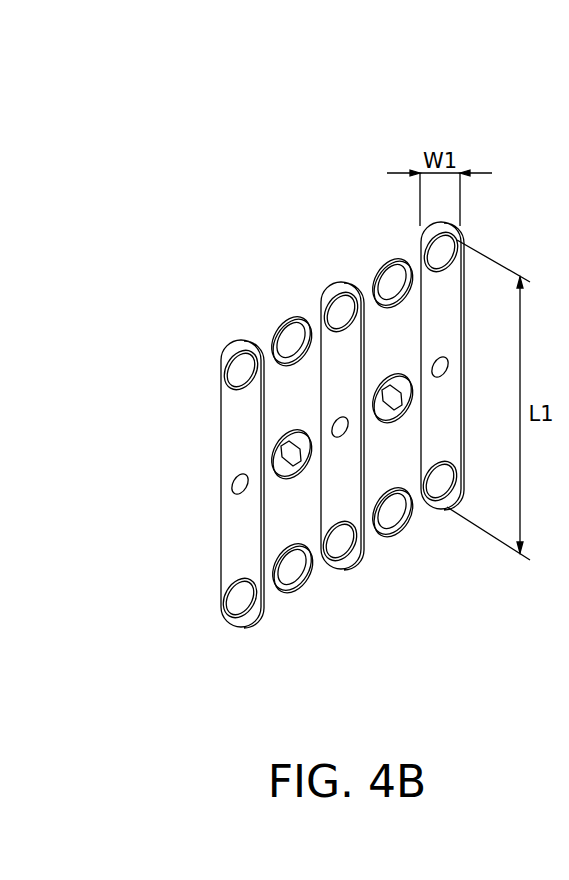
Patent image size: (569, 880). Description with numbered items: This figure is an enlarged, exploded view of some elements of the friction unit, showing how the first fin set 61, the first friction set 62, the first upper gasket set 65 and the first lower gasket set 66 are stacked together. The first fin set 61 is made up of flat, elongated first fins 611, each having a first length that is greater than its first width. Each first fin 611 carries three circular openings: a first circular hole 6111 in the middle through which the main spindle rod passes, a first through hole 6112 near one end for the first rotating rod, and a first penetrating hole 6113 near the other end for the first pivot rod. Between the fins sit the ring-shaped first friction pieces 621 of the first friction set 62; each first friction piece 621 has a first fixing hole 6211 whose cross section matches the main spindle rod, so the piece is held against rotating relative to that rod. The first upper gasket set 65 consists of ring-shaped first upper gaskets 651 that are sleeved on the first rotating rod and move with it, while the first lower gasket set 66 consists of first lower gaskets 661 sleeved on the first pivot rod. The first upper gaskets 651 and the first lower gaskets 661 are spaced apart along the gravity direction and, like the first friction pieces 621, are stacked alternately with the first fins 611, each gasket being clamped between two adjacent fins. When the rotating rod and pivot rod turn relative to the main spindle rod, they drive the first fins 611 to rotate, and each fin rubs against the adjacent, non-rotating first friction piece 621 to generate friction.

The first fin set 61 is at (117, 325).
The first fin 611 is at (222, 350).
The first circular hole 6111 is at (238, 483).
The first through hole 6112 is at (240, 369).
The first penetrating hole 6113 is at (238, 597).
The first friction set 62 is at (177, 240).
The first friction piece 621 is at (294, 429).
The first fixing hole 6211 is at (289, 451).
The first upper gasket set 65 is at (272, 117).
The first upper gasket 651 is at (300, 318).
The first lower gasket set 66 is at (320, 680).
The first lower gasket 661 is at (310, 577).